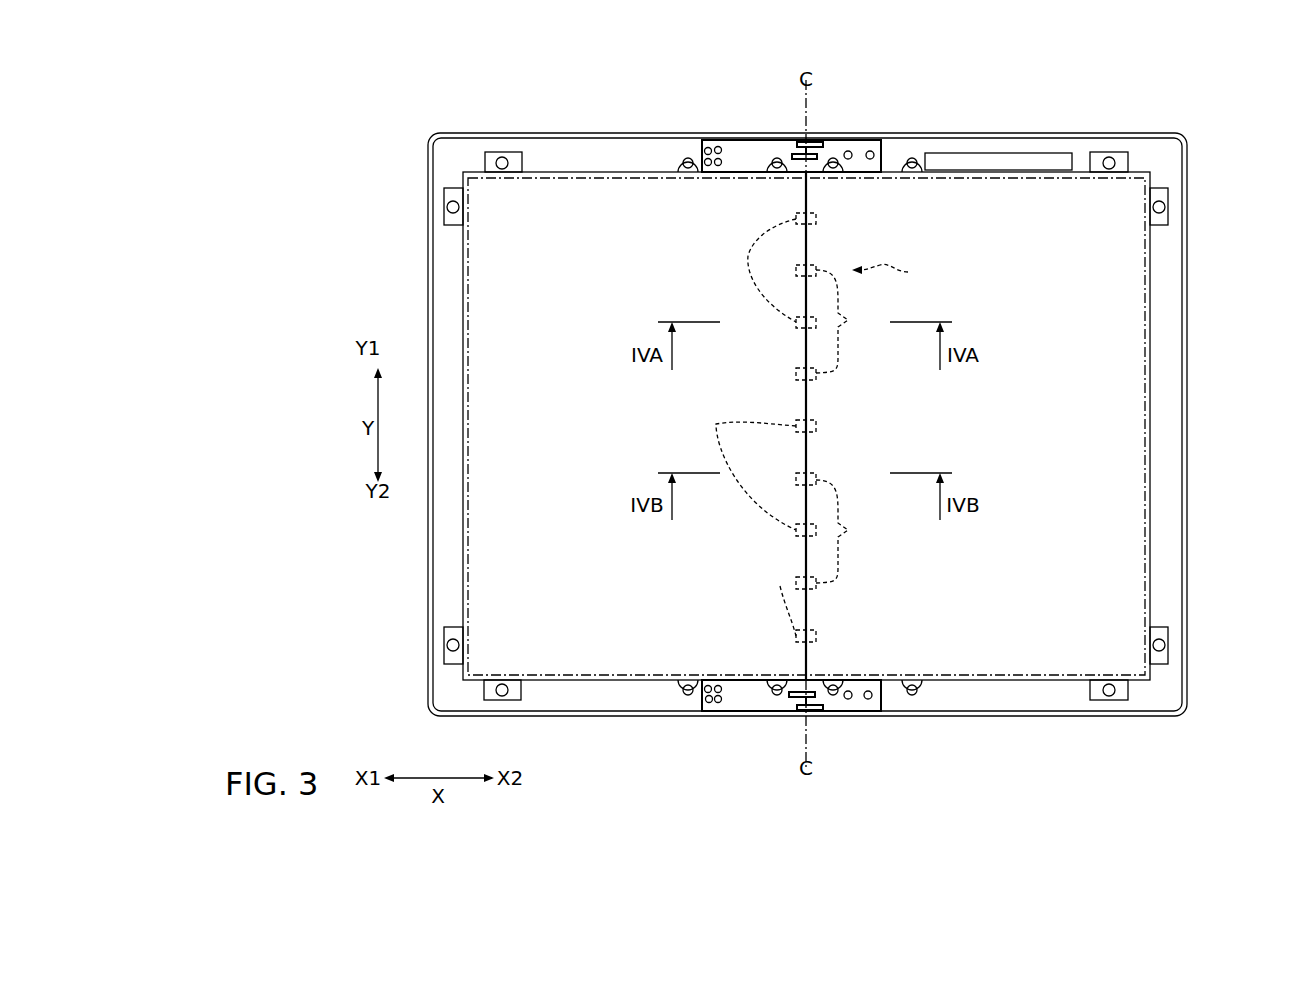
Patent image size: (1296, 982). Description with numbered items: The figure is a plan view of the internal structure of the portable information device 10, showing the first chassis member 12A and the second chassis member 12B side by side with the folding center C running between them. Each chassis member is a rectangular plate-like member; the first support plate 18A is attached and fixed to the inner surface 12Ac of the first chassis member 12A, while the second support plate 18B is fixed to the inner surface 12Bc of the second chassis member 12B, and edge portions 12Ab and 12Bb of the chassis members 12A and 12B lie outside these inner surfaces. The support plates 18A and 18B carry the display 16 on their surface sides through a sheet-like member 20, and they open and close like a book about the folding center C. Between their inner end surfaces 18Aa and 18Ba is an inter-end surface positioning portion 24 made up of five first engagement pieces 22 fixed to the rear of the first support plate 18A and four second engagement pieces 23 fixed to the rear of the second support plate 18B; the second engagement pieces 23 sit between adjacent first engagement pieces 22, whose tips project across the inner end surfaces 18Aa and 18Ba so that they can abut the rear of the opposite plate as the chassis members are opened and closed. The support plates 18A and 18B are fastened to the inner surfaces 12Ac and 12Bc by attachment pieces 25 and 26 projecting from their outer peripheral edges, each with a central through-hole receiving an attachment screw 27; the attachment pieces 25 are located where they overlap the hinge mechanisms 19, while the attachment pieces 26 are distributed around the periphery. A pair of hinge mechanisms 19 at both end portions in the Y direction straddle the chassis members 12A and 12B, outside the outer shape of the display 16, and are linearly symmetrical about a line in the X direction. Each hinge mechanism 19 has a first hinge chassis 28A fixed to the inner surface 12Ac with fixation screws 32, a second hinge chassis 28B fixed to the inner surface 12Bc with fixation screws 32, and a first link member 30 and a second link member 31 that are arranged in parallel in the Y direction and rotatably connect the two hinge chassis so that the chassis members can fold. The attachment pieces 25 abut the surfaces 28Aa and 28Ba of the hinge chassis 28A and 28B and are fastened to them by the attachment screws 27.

The display device 10 is at (346, 91).
The first chassis member 12A is at (470, 716).
The second chassis member 12B is at (1152, 716).
The inner surface of first chassis member 12Ac is at (440, 550).
The inner surface of second chassis member 12Bc is at (1172, 550).
The frame portion 12Ab is at (432, 602).
The frame portion 12Bb is at (1182, 602).
The display 16 is at (1152, 465).
The sheet-like member 20 is at (806, 426).
The first support plate 18A is at (492, 262).
The second support plate 18B is at (1110, 256).
The inner end surface of first support plate 18Aa is at (808, 400).
The inner end surface of second support plate 18Ba is at (806, 452).
The hinge mechanism 19 is at (750, 712).
The first engagement piece 22 is at (744, 427).
The second engagement piece 23 is at (847, 426).
The inter-end surface positioning portion 24 is at (894, 272).
The attachment piece 25 is at (846, 678).
The attachment piece 26 is at (925, 712).
The attachment screw 27 is at (912, 702).
The first hinge chassis 28A is at (736, 712).
The second hinge chassis 28B is at (855, 712).
The surface of first hinge chassis 28Aa is at (745, 678).
The surface of second hinge chassis 28Ba is at (870, 678).
The first link member 30 is at (797, 699).
The second link member 31 is at (815, 712).
The fixation screw 32 is at (869, 700).